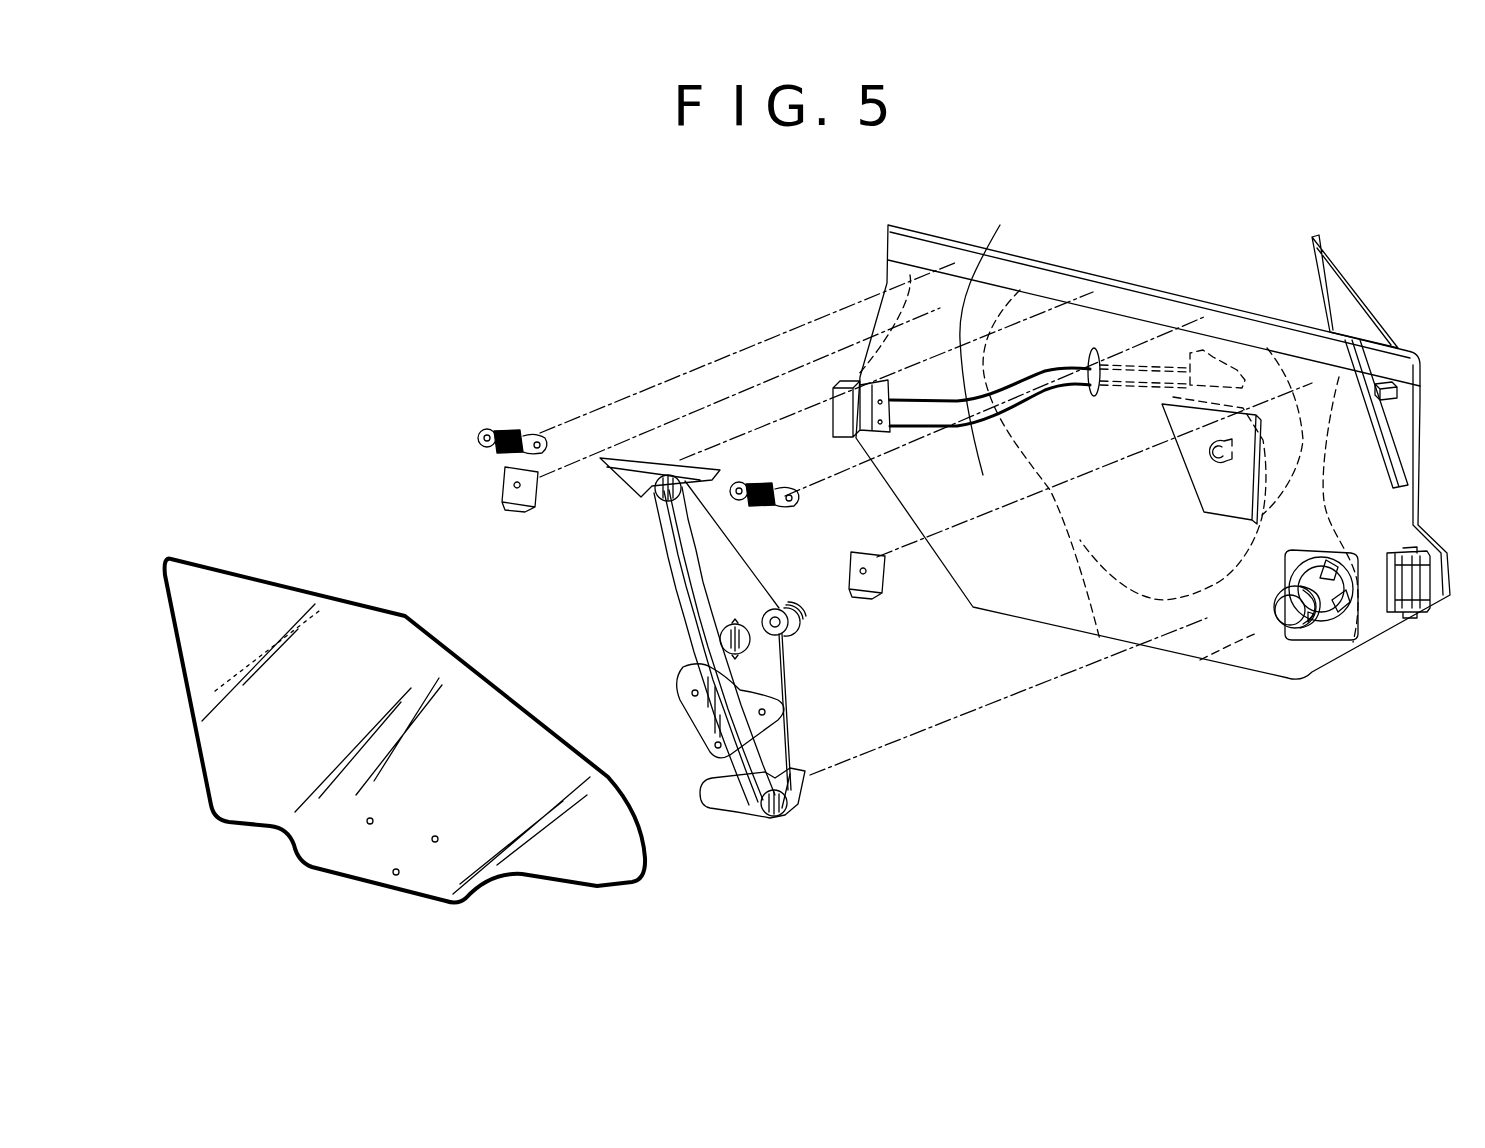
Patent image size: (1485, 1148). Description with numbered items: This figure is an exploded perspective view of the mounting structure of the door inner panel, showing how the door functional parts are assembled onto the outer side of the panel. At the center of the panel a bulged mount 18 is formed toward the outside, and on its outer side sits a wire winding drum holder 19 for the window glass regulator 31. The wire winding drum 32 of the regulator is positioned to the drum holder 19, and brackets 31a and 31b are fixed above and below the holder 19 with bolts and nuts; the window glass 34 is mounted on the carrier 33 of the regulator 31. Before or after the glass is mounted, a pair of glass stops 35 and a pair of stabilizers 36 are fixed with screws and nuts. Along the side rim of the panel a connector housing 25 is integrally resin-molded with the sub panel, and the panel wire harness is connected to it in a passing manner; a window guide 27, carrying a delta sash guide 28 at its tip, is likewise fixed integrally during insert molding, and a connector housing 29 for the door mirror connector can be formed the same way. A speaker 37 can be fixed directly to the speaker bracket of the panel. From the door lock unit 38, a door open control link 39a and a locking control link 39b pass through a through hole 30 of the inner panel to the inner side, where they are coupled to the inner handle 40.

The mount 18 is at (1213, 497).
The wire winding drum holder 19 is at (1202, 452).
The connector housing 25 is at (1422, 617).
The window guide 27 is at (1400, 450).
The delta sash guide 28 is at (1370, 300).
The connector housing 29 is at (1397, 393).
The through hole 30 is at (1093, 397).
The window glass regulator 31 is at (750, 640).
The bracket 31a is at (633, 482).
The bracket 31b is at (805, 790).
The wire winding drum 32 is at (790, 633).
The carrier 33 is at (712, 730).
The window glass 34 is at (353, 864).
The glass stops 35 is at (503, 487).
The stabilizers 36 is at (512, 428).
The speaker 37 is at (1290, 613).
The door lock unit 38 is at (845, 380).
The door open control link 39a is at (1000, 235).
The locking control link 39b is at (965, 423).
The inner handle 40 is at (1213, 352).